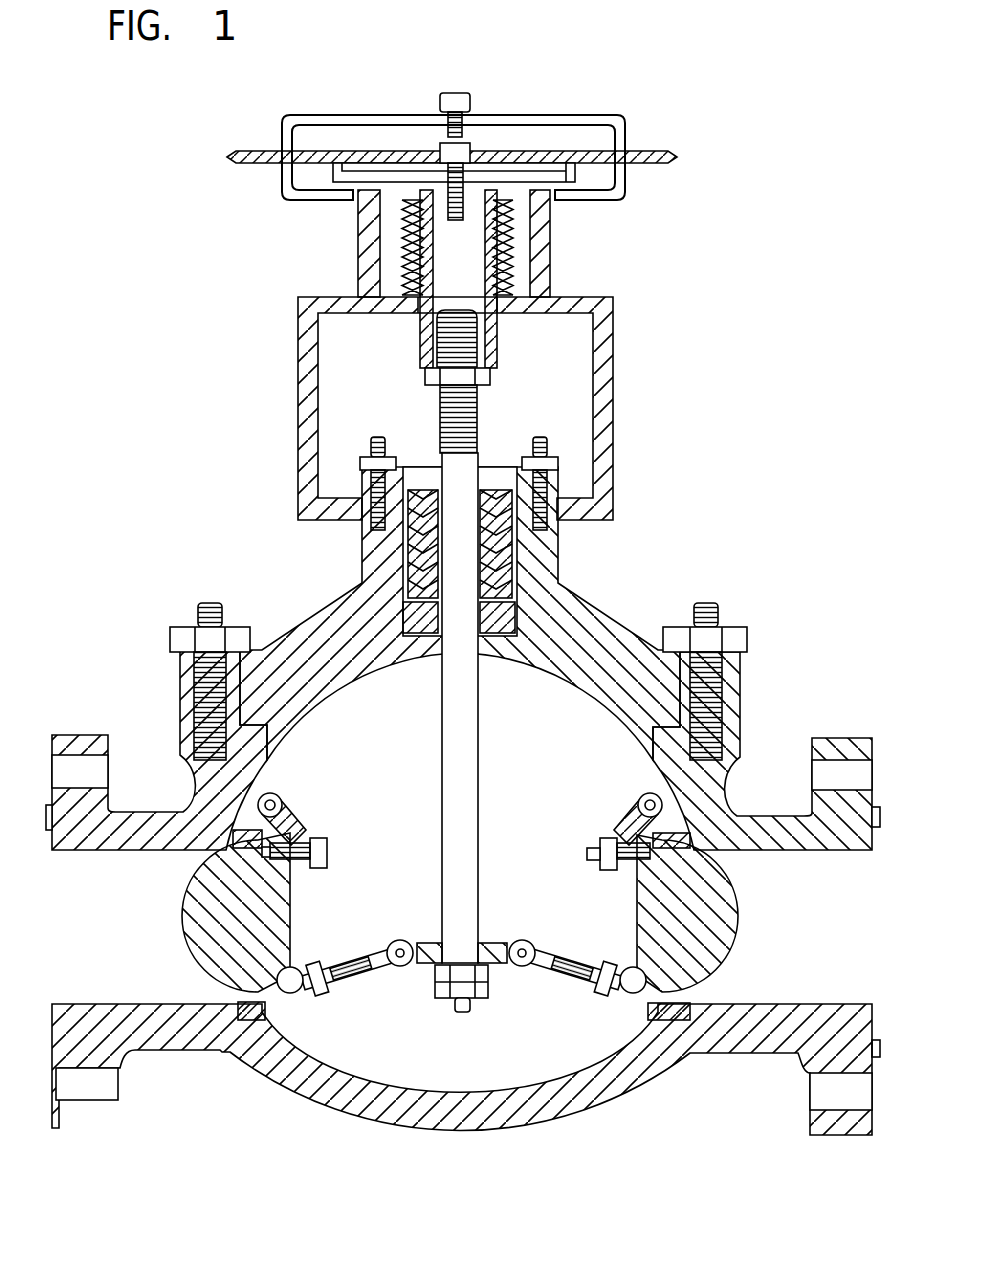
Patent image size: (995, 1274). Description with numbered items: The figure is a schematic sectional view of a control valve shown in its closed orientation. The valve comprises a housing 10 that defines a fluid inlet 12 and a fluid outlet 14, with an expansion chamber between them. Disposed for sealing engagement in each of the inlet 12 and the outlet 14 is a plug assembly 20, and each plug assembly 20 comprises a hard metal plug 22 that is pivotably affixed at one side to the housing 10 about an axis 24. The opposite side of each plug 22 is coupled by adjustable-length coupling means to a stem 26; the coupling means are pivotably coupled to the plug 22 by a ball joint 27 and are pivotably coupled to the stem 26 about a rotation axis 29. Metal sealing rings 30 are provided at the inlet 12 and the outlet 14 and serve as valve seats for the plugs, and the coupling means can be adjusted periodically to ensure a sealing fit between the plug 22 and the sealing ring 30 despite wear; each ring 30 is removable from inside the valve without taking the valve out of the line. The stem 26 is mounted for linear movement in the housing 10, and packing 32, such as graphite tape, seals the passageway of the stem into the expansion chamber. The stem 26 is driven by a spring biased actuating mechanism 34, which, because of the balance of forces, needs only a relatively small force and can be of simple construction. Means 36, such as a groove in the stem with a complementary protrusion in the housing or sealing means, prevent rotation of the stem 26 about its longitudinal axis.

The housing 10 is at (565, 1118).
The fluid inlet 12 is at (118, 952).
The fluid outlet 14 is at (818, 961).
The plug assembly 20 is at (307, 896).
The hard metal plug 22 is at (200, 882).
The axis 24 is at (282, 797).
The stem 26 is at (482, 716).
The ball joint 27 is at (286, 971).
The rotation axis 29 is at (407, 948).
The metal sealing ring 30 is at (253, 1022).
The packing 32 is at (512, 598).
The spring biased actuating mechanism 34 is at (510, 270).
The means to prevent rotation of stem 36 is at (512, 620).